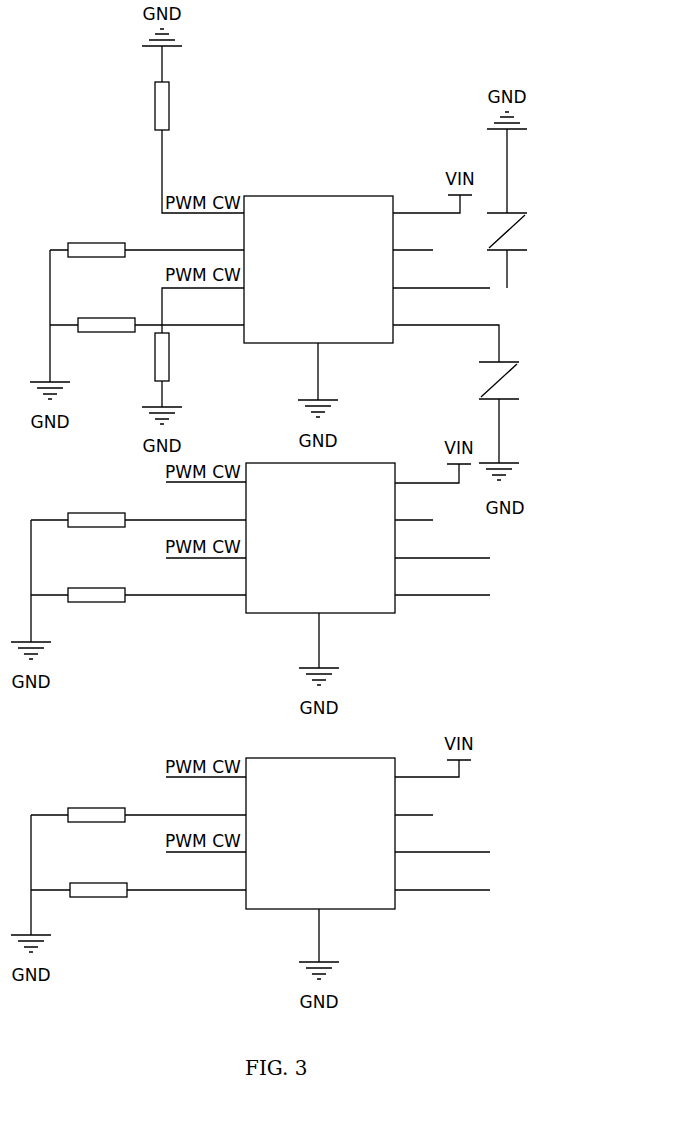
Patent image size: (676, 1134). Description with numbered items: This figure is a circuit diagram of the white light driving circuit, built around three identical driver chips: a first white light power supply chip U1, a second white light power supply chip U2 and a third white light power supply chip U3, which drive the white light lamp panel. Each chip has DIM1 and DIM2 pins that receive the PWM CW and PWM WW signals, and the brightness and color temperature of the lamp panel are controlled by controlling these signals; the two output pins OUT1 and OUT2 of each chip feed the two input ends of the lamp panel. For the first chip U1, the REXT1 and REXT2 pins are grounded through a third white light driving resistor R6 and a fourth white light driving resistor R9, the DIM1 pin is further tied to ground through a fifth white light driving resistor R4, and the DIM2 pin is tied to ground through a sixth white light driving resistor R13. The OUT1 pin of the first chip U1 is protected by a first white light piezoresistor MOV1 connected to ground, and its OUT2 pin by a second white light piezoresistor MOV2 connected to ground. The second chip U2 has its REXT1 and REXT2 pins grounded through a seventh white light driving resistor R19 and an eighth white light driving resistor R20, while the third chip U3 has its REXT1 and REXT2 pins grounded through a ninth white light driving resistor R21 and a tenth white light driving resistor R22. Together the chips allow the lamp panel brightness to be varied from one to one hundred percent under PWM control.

The first white light power supply chip U1 is at (354, 257).
The second white light power supply chip U2 is at (354, 527).
The third white light power supply chip U3 is at (354, 821).
The fifth white light driving resistor R4 is at (199, 129).
The third white light driving resistor R6 is at (147, 240).
The fourth white light driving resistor R9 is at (147, 313).
The sixth white light driving resistor R13 is at (184, 370).
The seventh white light driving resistor R19 is at (138, 509).
The eighth white light driving resistor R20 is at (138, 584).
The ninth white light driving resistor R21 is at (138, 804).
The tenth white light driving resistor R22 is at (138, 879).
The first white light piezoresistor MOV1 is at (536, 208).
The second white light piezoresistor MOV2 is at (528, 394).